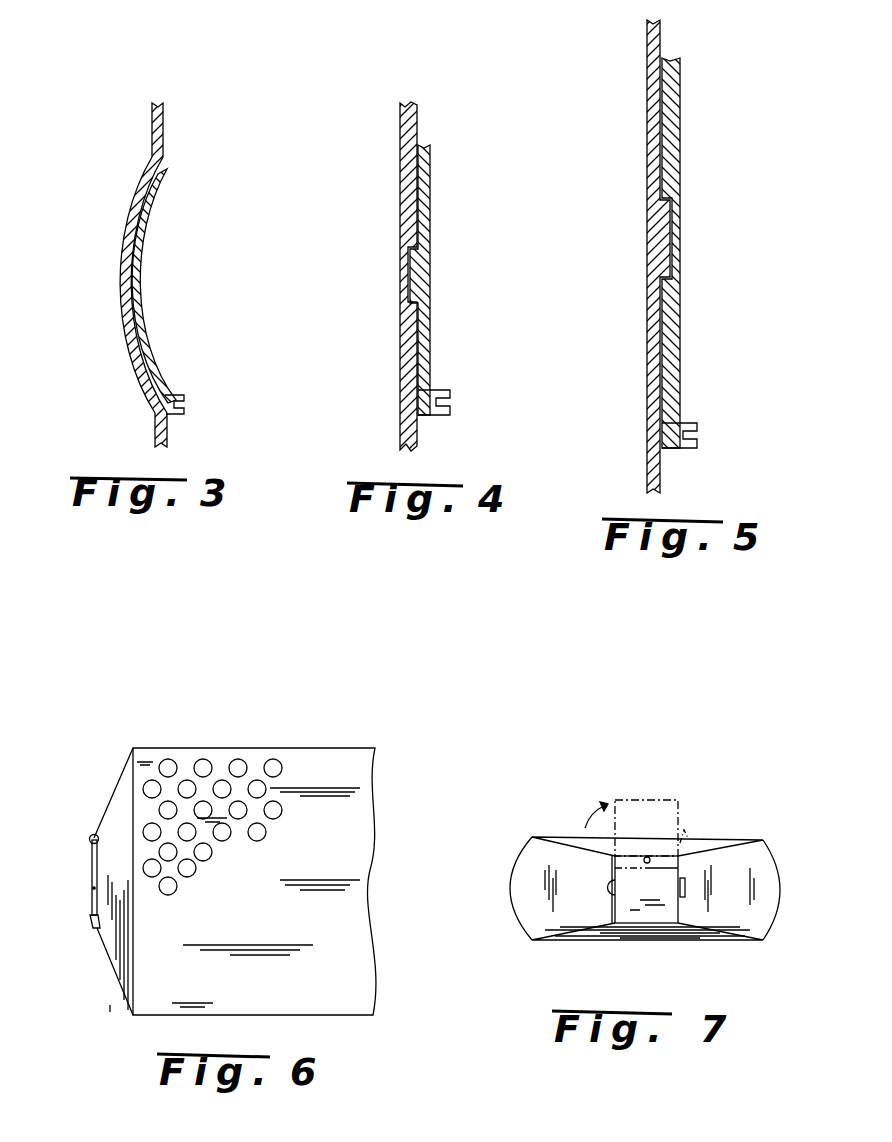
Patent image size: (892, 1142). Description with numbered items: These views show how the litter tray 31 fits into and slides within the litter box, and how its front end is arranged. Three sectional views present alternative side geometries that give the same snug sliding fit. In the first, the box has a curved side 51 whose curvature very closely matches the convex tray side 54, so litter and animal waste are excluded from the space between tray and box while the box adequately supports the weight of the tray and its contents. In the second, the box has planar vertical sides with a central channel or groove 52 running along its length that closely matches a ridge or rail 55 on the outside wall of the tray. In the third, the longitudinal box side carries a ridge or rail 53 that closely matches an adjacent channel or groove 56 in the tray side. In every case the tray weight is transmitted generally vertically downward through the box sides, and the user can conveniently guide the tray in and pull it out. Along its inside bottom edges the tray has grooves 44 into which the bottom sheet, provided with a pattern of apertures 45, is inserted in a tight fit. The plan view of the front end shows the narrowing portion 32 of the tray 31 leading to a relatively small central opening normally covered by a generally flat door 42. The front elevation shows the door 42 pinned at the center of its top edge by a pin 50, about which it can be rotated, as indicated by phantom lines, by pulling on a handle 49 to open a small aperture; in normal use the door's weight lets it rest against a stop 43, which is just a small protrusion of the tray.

In FIG. 6, the tray 31 is at (333, 747).
In FIG. 6, the narrowing portion 32 is at (118, 942).
In FIG. 7, the narrowing portion 32 is at (537, 897).
In FIG. 6, the door 42 is at (91, 864).
In FIG. 7, the door 42 is at (656, 910).
In FIG. 7, the stop 43 is at (684, 897).
In FIG. 3, the grooves 44 is at (187, 405).
In FIG. 4, the grooves 44 is at (452, 405).
In FIG. 5, the grooves 44 is at (692, 434).
In FIG. 6, the apertures 45 is at (206, 766).
In FIG. 6, the handle 49 is at (93, 835).
In FIG. 7, the handle 49 is at (690, 832).
In FIG. 6, the pin 50 is at (92, 888).
In FIG. 7, the pin 50 is at (650, 857).
In FIG. 3, the curved side 51 is at (125, 254).
In FIG. 4, the channel or groove 52 is at (407, 262).
In FIG. 5, the ridge or rail 53 is at (667, 222).
In FIG. 3, the tray side 54 is at (141, 284).
In FIG. 7, the tray side 54 is at (518, 867).
In FIG. 4, the ridge or rail 55 is at (431, 273).
In FIG. 5, the channel or groove 56 is at (674, 252).